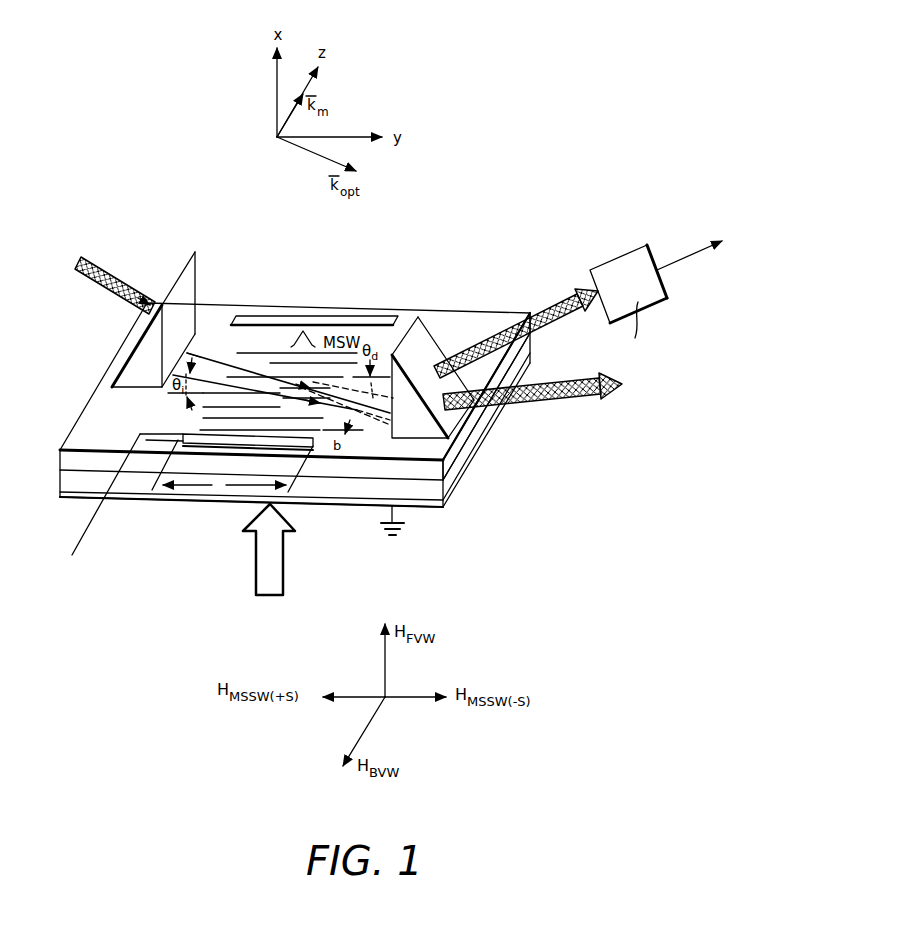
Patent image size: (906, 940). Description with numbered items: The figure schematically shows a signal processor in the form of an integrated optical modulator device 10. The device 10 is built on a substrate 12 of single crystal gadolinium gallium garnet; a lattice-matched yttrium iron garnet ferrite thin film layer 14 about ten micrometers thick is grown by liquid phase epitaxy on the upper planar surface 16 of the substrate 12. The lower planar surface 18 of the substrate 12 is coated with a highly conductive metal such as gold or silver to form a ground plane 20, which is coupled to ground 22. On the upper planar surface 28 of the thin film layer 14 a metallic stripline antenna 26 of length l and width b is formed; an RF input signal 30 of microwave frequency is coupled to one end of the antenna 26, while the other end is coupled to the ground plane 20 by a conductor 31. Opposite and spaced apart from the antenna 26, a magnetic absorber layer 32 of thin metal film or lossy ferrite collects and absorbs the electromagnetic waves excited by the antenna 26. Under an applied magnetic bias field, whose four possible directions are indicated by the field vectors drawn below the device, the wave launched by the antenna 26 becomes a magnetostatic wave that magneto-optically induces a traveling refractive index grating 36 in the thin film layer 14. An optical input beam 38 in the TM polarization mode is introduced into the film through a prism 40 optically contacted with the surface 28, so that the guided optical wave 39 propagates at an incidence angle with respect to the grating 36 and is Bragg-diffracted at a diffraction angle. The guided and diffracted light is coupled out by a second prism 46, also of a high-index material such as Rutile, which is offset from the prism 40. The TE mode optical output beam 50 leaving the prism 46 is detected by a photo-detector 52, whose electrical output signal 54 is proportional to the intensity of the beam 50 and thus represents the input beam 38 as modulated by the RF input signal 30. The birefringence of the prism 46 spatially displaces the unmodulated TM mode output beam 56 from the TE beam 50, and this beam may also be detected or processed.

The integrated optical modulator device 10 is at (565, 540).
The substrate 12 is at (456, 467).
The thin film layer 14 is at (472, 422).
The upper planar surface 16 is at (480, 446).
The lower planar surface 18 is at (449, 491).
The ground plane 20 is at (443, 507).
The ground 22 is at (405, 526).
The stripline antenna 26 is at (179, 432).
The upper planar surface 28 is at (109, 446).
The RF input signal 30 is at (91, 526).
The conductor 31 is at (299, 478).
The magnetic absorber layer 32 is at (376, 318).
The traveling refractive index grating 36 is at (257, 354).
The optical input beam 38 is at (104, 263).
The guided optical wave 39 is at (187, 351).
The prism 40 is at (193, 287).
The second prism 46 is at (438, 348).
The TE mode optical output beam 50 is at (562, 326).
The photo-detector 52 is at (614, 294).
The electrical output signal 54 is at (697, 256).
The TM mode output beam 56 is at (575, 401).